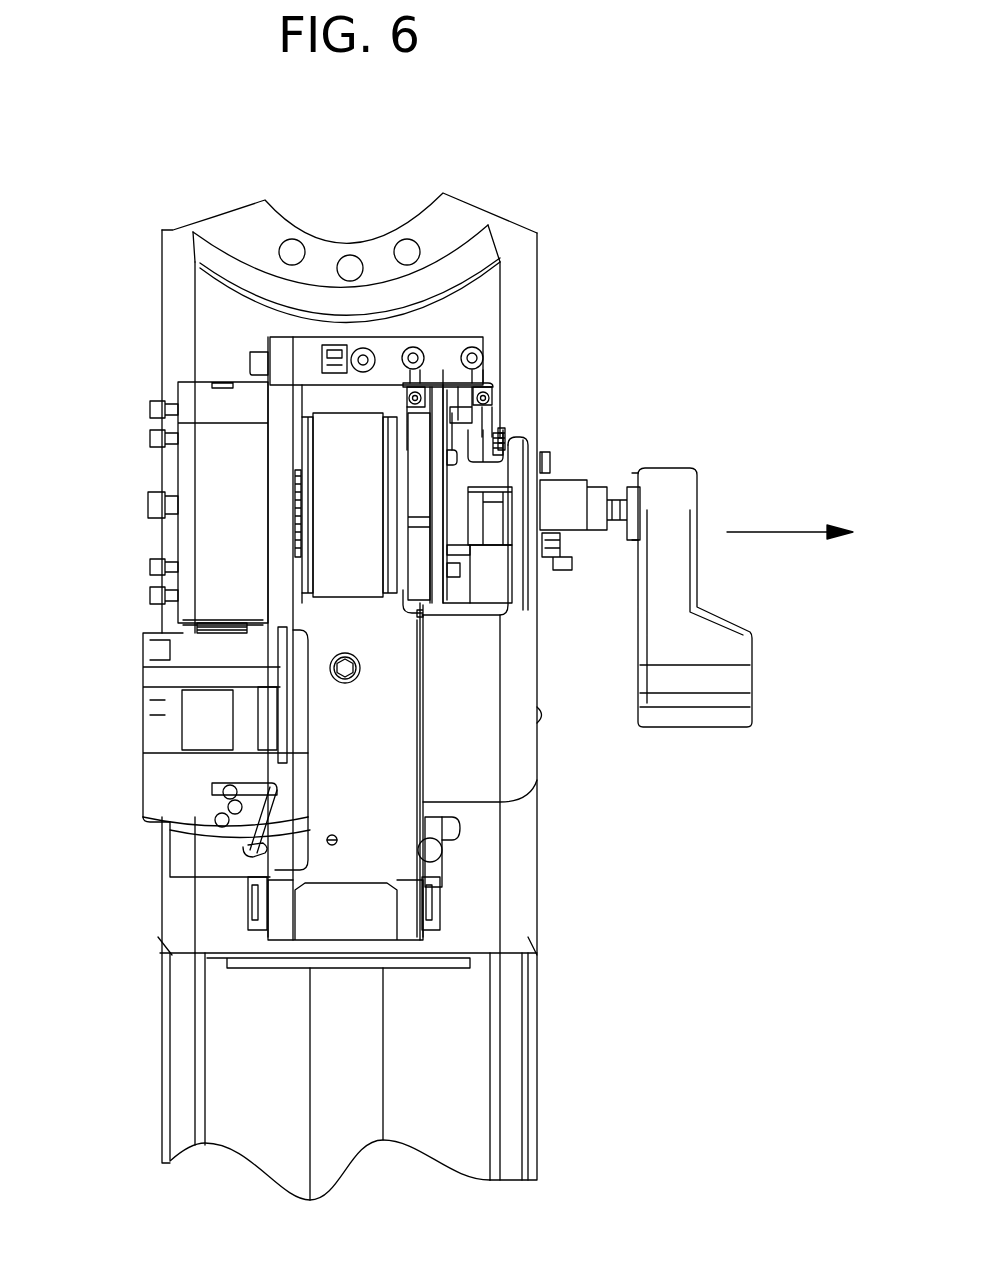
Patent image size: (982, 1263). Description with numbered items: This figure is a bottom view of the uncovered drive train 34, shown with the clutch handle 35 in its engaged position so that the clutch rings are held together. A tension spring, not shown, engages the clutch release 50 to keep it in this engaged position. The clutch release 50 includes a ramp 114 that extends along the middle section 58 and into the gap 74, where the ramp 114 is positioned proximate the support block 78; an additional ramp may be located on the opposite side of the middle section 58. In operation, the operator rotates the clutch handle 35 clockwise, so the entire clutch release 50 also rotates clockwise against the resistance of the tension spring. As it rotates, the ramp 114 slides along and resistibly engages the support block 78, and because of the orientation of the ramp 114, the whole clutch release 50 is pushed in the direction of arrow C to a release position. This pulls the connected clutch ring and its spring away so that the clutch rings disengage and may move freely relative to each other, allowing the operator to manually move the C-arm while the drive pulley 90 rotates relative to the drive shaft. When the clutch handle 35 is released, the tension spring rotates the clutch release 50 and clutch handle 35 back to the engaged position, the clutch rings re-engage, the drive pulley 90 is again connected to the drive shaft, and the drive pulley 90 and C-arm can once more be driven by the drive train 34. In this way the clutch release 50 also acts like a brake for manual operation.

The drive train 34 is at (101, 349).
The drive pulley 90 is at (325, 432).
The clutch release 50 is at (522, 428).
The middle section 58 is at (518, 475).
The support block 78 is at (505, 512).
The ramp 114 is at (513, 572).
The gap 74 is at (479, 591).
The clutch handle 35 is at (737, 652).
The arrow C is at (787, 532).